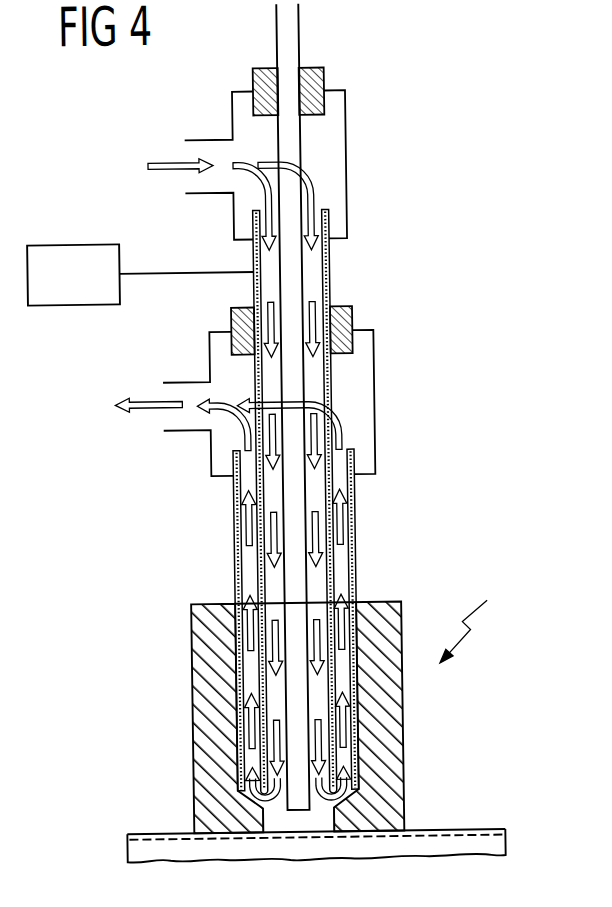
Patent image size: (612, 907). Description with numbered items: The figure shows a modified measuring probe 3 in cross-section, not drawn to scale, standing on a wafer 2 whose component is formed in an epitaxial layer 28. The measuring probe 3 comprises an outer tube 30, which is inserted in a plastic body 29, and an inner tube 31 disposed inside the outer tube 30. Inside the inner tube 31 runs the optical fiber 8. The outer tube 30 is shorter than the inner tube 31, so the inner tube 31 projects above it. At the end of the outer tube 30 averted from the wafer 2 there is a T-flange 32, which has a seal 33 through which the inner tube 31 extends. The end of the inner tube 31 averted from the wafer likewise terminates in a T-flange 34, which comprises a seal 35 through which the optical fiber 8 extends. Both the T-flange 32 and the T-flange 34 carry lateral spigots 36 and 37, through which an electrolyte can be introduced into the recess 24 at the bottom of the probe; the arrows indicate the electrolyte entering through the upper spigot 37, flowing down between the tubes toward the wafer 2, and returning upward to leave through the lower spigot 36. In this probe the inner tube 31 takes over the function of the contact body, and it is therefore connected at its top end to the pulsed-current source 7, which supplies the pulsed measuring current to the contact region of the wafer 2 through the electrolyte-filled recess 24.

The wafer 2 is at (492, 850).
The measuring probe 3 is at (471, 616).
The pulsed-current source 7 is at (72, 242).
The optical fiber 8 is at (294, 53).
The recess 24 is at (275, 822).
The epitaxial layer 28 is at (463, 832).
The plastic body 29 is at (396, 742).
The outer tube 30 is at (353, 541).
The inner tube 31 is at (331, 266).
The T-flange 32 is at (374, 404).
The seal 33 is at (354, 319).
The T-flange 34 is at (350, 161).
The seal 35 is at (329, 78).
The lateral spigot 36 is at (180, 418).
The lateral spigot 37 is at (207, 146).